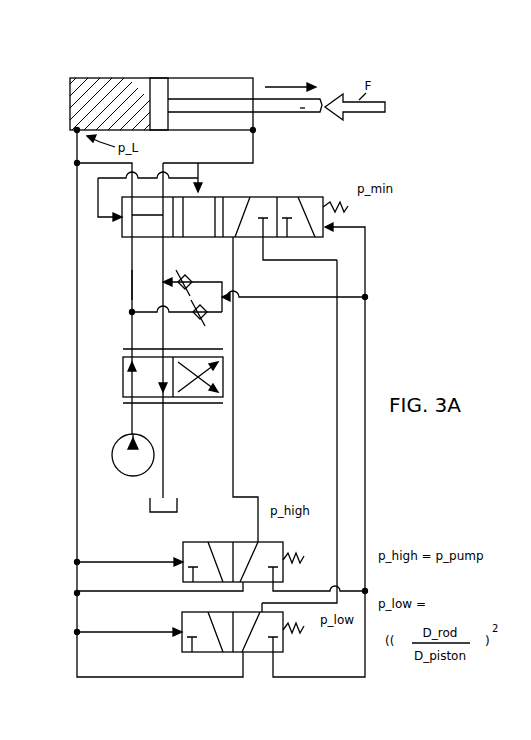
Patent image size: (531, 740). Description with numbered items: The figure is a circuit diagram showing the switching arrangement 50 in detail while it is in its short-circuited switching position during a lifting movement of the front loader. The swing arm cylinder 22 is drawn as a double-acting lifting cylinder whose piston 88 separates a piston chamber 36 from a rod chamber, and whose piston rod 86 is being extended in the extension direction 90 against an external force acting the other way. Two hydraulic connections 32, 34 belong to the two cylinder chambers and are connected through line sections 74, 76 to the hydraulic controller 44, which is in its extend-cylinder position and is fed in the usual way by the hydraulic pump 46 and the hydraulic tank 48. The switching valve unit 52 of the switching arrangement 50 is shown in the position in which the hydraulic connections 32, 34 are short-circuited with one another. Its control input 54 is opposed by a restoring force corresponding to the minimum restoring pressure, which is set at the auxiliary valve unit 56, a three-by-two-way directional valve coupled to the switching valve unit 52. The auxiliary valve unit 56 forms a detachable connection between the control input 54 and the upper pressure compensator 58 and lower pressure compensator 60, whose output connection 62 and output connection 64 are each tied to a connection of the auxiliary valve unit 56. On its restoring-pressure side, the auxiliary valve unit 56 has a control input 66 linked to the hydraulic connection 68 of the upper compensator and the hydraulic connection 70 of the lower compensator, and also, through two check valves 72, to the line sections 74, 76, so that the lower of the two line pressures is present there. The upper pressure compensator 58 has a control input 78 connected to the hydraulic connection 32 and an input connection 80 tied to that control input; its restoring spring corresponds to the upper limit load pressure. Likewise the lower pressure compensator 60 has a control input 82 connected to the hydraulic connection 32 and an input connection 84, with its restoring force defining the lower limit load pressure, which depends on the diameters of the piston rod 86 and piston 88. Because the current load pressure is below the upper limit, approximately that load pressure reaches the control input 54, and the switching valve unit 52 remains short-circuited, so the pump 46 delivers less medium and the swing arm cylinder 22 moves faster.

The swing arm cylinder 22 is at (156, 77).
The hydraulic connection 32 is at (75, 134).
The hydraulic connection 34 is at (260, 134).
The piston chamber 36 is at (120, 93).
The hydraulic controller 44 is at (114, 378).
The hydraulic pump 46 is at (125, 478).
The hydraulic tank 48 is at (145, 503).
The switching arrangement 50 is at (370, 226).
The switching valve unit 52 is at (144, 319).
The control input 54 is at (117, 222).
The auxiliary valve unit 56 is at (304, 192).
The upper pressure compensator 58 is at (288, 543).
The lower pressure compensator 60 is at (300, 646).
The output connection 62 is at (256, 538).
The output connection 64 is at (258, 611).
The control input 66 is at (327, 238).
The hydraulic connection 68 is at (283, 582).
The hydraulic connection 70 is at (277, 653).
The check valve 72 is at (196, 272).
The line section 74 is at (131, 280).
The line section 76 is at (193, 321).
The control input 78 is at (177, 560).
The input connection 80 is at (245, 591).
The control input 82 is at (178, 641).
The input connection 84 is at (241, 653).
The piston rod 86 is at (305, 112).
The piston 88 is at (172, 112).
The extension direction 90 is at (291, 84).